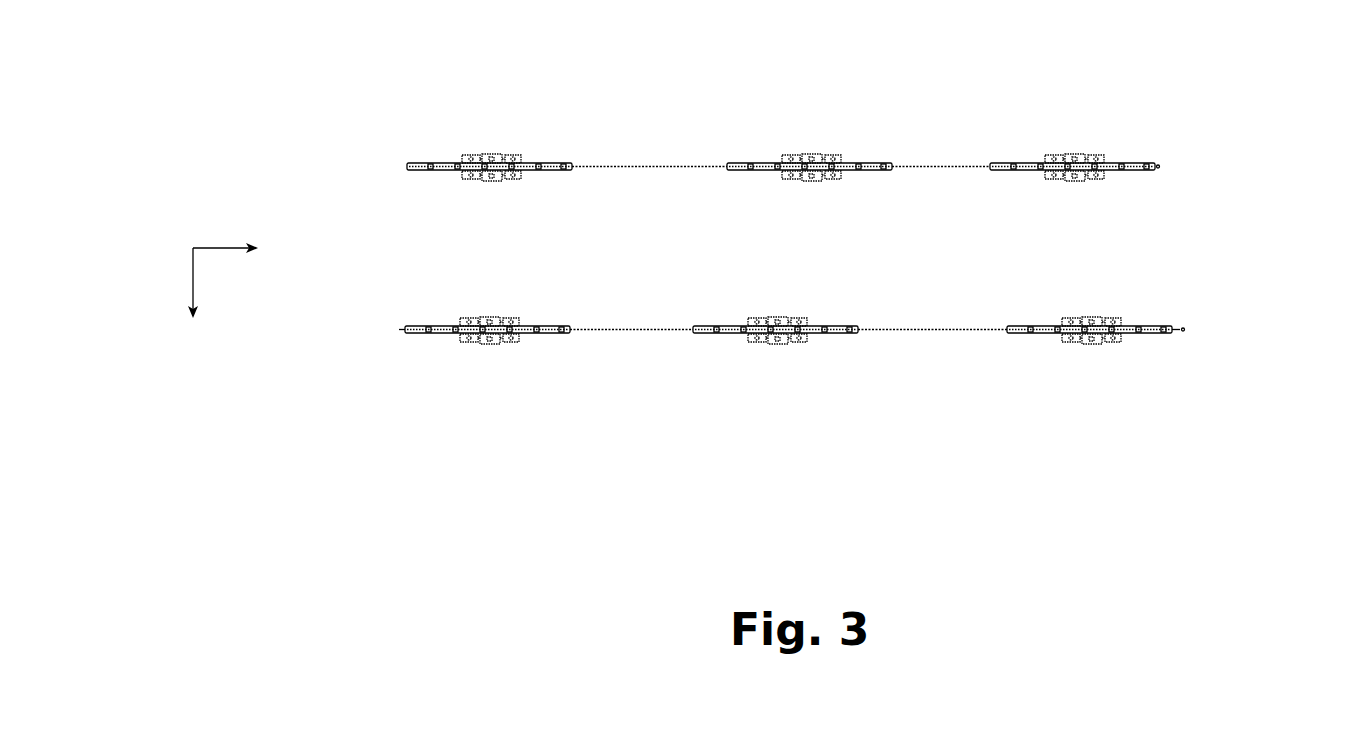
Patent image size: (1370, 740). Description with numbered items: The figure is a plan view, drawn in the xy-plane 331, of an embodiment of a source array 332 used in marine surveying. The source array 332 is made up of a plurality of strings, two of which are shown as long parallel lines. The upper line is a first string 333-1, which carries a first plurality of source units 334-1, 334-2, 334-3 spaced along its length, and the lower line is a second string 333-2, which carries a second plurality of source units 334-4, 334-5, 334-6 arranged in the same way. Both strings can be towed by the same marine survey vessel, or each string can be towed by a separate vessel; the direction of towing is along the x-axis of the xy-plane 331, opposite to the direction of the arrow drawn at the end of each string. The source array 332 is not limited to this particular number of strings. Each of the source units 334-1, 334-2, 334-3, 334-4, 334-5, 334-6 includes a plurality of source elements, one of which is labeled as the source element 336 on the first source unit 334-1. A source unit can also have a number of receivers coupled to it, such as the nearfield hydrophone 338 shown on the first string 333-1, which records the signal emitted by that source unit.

The xy-plane 331 is at (193, 248).
The source array 332 is at (464, 441).
The first string 333-1 is at (1172, 166).
The second string 333-2 is at (1200, 329).
The source unit 334-1 is at (537, 132).
The source unit 334-2 is at (840, 132).
The source unit 334-3 is at (1112, 132).
The source unit 334-4 is at (542, 366).
The source unit 334-5 is at (836, 366).
The source unit 334-6 is at (1112, 366).
The source element 336 is at (470, 152).
The nearfield hydrophone 338 is at (420, 172).